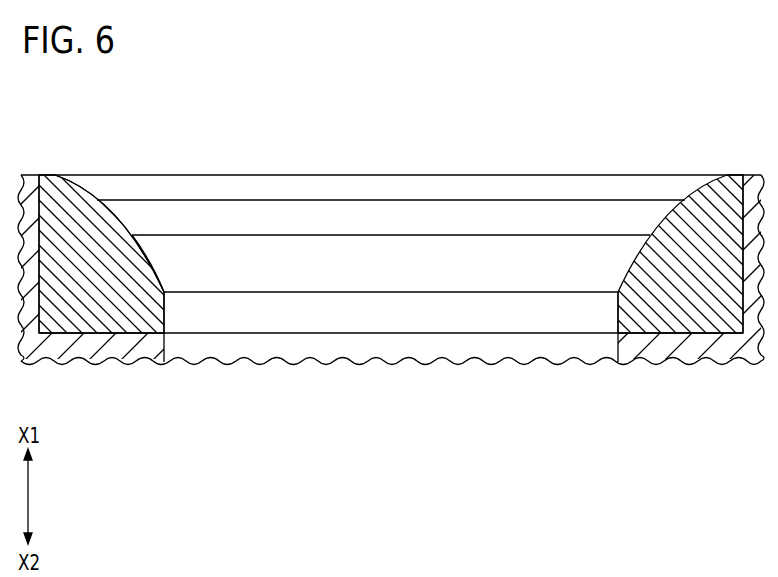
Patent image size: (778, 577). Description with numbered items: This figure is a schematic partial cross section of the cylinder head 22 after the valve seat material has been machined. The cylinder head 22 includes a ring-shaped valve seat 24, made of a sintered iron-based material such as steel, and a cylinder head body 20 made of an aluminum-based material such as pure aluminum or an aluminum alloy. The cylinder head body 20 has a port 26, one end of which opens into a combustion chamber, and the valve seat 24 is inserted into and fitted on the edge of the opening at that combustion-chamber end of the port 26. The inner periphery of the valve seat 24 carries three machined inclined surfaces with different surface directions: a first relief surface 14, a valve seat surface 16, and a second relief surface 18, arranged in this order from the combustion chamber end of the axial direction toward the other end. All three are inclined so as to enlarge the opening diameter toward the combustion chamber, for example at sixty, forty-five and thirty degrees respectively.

The first relief surface 14 is at (86, 193).
The valve seat surface 16 is at (118, 222).
The second relief surface 18 is at (151, 268).
The cylinder head body 20 is at (717, 350).
The cylinder head 22 is at (713, 91).
The valve seat 24 is at (675, 230).
The port 26 is at (617, 342).